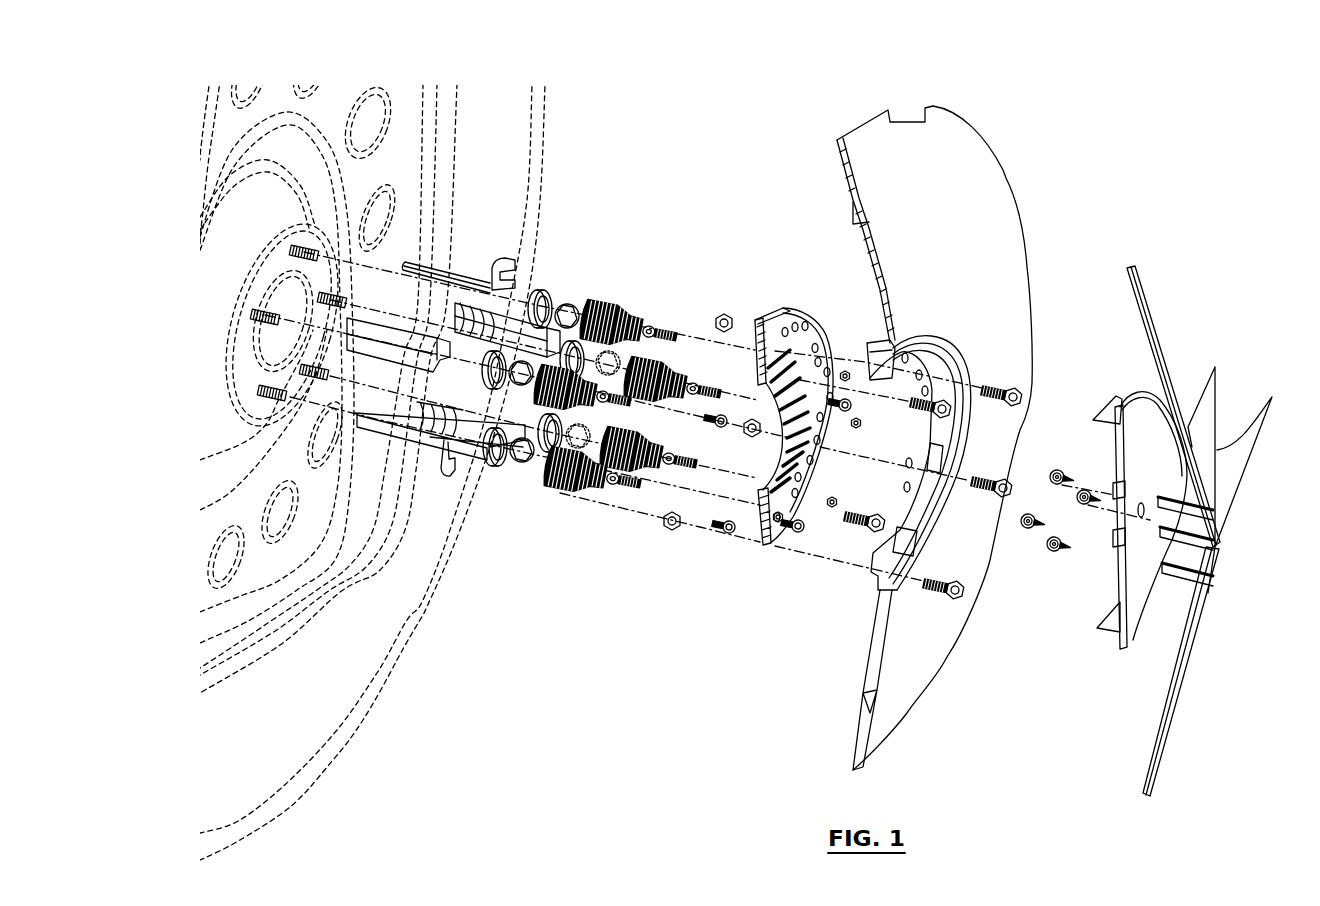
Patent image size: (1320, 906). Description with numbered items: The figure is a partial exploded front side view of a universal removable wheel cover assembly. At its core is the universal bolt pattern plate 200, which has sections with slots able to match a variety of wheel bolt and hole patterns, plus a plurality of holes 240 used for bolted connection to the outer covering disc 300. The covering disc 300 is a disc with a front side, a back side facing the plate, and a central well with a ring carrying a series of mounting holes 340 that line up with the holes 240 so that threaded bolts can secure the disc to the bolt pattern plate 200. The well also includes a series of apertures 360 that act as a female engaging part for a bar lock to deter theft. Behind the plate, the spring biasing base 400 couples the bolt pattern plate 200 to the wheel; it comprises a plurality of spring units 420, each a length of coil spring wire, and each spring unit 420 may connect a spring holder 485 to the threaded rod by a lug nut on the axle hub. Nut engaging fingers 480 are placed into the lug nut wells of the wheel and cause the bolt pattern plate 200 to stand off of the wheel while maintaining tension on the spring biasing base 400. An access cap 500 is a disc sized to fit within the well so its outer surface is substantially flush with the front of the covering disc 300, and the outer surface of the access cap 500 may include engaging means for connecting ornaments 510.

The universal bolt pattern plate 200 is at (763, 546).
The holes 240 is at (812, 315).
The outer covering disc 300 is at (887, 730).
The mounting holes 340 is at (905, 345).
The apertures 360 is at (937, 458).
The spring biasing base 400 is at (602, 412).
The spring unit 420 is at (608, 308).
The nut engaging fingers 480 is at (410, 455).
The spring holder 485 is at (492, 458).
The access cap 500 is at (1133, 647).
The ornaments 510 is at (1220, 577).